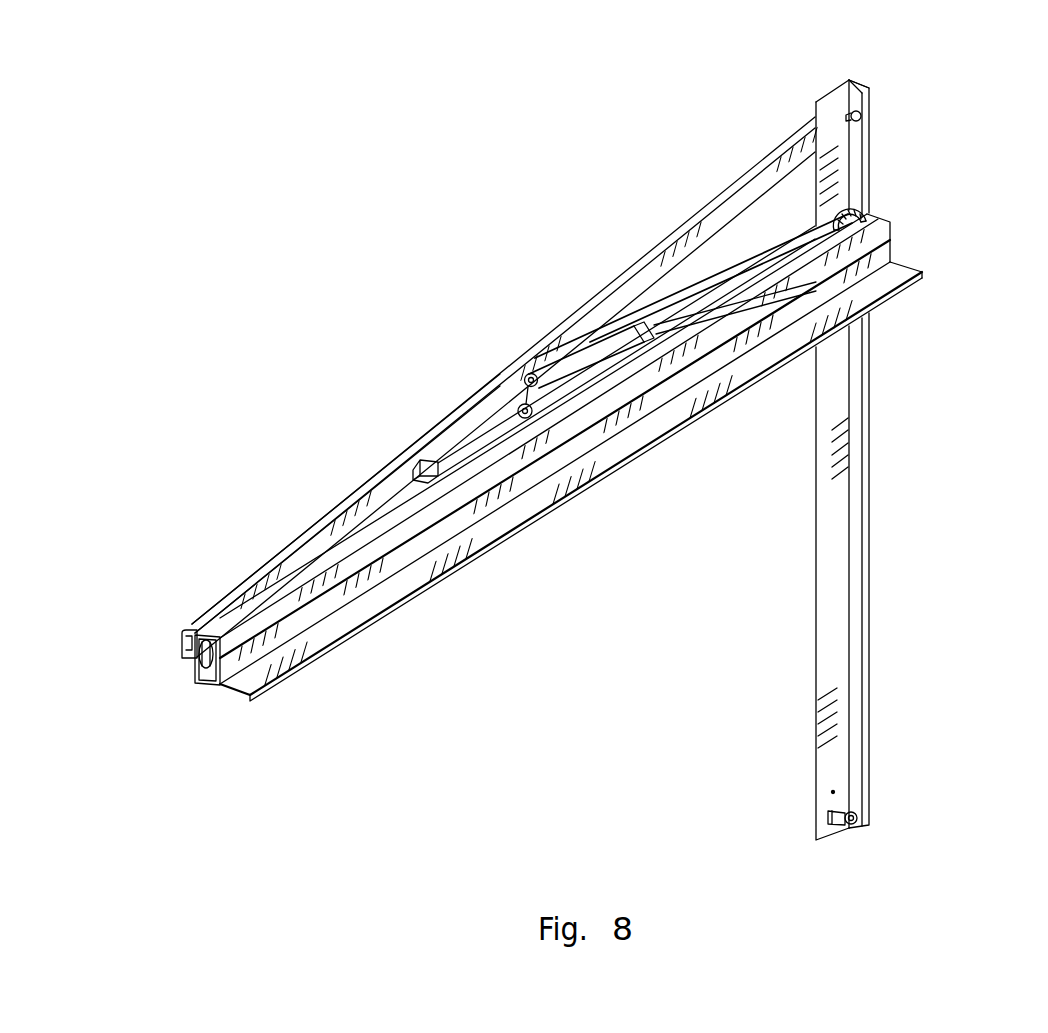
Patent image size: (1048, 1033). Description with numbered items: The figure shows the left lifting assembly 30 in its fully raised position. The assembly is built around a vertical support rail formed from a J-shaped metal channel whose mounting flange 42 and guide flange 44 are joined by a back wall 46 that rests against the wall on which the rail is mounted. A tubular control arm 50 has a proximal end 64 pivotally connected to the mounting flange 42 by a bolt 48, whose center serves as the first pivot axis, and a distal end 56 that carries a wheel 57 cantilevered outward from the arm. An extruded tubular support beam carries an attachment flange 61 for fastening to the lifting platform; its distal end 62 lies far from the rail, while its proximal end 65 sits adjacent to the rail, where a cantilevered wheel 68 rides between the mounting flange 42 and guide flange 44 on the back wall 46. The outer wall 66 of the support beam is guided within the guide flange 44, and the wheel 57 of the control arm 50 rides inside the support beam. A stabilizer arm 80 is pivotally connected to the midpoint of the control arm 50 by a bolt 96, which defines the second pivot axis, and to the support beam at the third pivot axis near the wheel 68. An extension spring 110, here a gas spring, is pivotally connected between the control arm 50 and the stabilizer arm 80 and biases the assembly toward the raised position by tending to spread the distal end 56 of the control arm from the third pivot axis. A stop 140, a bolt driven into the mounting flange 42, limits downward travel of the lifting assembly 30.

The left lifting assembly 30 is at (487, 326).
The mounting flange 42 is at (822, 775).
The guide flange 44 is at (870, 665).
The back wall 46 is at (852, 80).
The bolt 48 is at (862, 115).
The control arm 50 is at (627, 277).
The distal end 56 is at (170, 638).
The wheel 57 is at (182, 667).
The attachment flange 61 is at (520, 515).
The distal end 62 is at (272, 701).
The proximal end 64 is at (792, 112).
The proximal end of support beam 65 is at (917, 287).
The outer wall 66 is at (182, 678).
The wheel 68 is at (862, 192).
The stabilizer arm 80 is at (737, 263).
The bolt 96 is at (532, 373).
The extension spring 110 is at (523, 405).
The stop 140 is at (848, 822).